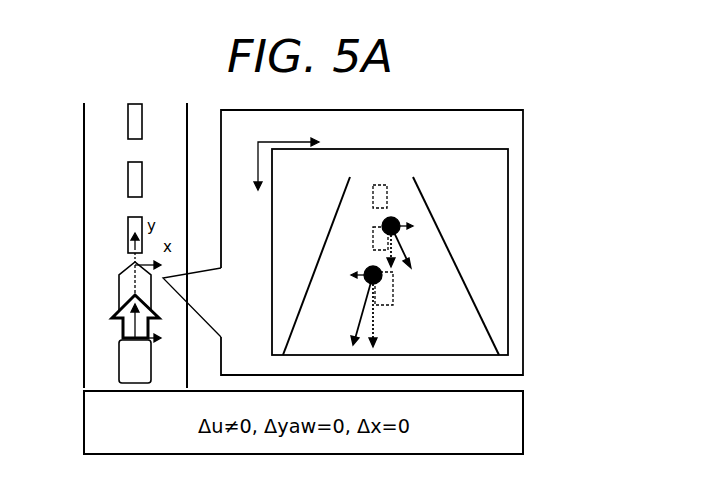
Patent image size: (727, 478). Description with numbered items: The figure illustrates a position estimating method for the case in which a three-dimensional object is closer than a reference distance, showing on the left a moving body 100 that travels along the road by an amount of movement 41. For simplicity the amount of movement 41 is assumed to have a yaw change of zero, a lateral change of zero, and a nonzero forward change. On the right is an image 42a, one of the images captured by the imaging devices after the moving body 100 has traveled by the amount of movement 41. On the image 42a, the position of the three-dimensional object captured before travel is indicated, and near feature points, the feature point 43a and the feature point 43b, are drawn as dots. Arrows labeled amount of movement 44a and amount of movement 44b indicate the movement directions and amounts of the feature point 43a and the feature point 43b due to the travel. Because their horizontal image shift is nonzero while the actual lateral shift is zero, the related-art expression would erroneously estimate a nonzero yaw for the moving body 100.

The moving body 100 is at (118, 284).
The amount of movement 41 is at (119, 326).
The image 42a is at (516, 130).
The feature point 43a is at (397, 215).
The feature point 43b is at (365, 268).
The amount of movement 44a is at (401, 247).
The amount of movement 44b is at (374, 319).